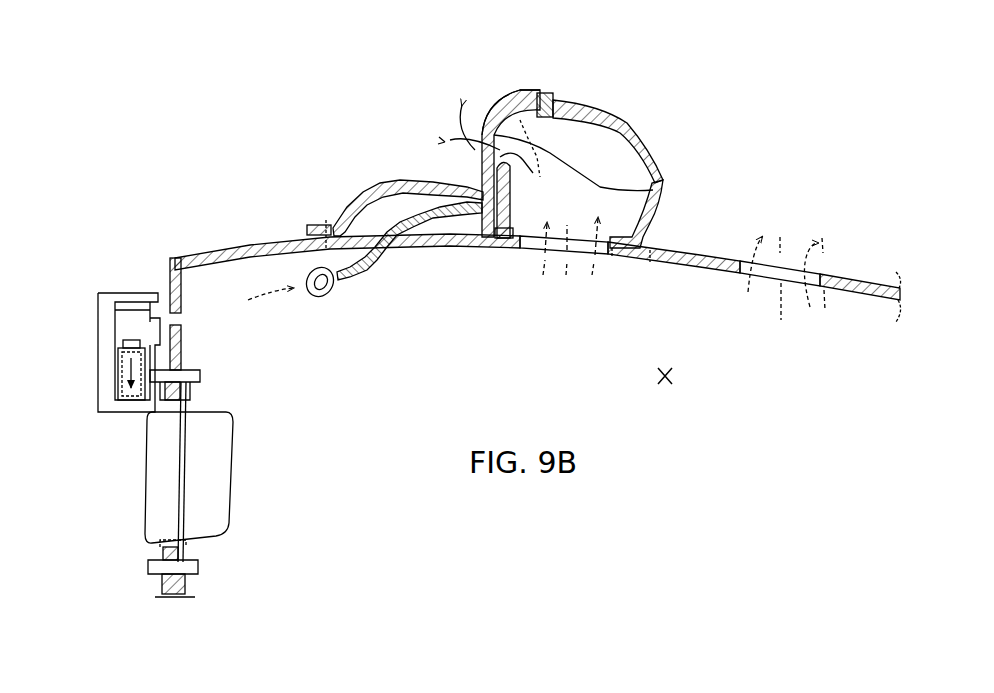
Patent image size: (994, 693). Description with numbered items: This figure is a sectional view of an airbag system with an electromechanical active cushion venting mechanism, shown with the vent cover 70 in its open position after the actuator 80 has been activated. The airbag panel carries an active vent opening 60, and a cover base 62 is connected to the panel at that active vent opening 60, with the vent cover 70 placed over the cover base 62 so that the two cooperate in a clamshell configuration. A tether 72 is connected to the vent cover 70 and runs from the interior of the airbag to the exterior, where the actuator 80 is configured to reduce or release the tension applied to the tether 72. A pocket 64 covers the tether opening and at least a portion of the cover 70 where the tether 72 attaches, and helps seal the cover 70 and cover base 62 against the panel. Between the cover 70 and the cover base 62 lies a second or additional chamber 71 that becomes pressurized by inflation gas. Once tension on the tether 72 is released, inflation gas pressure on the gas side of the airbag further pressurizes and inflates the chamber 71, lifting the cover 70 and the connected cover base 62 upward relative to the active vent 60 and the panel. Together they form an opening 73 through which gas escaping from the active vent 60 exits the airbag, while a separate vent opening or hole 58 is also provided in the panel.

The vent opening or hole 58 is at (806, 322).
The active vent opening or hole 60 is at (540, 288).
The cover base 62 is at (641, 237).
The pocket 64 is at (378, 183).
The vent cover 70 is at (604, 118).
The second or additional chamber 71 is at (606, 152).
The tether 72 is at (358, 267).
The opening 73 is at (520, 133).
The actuator 80 is at (105, 297).